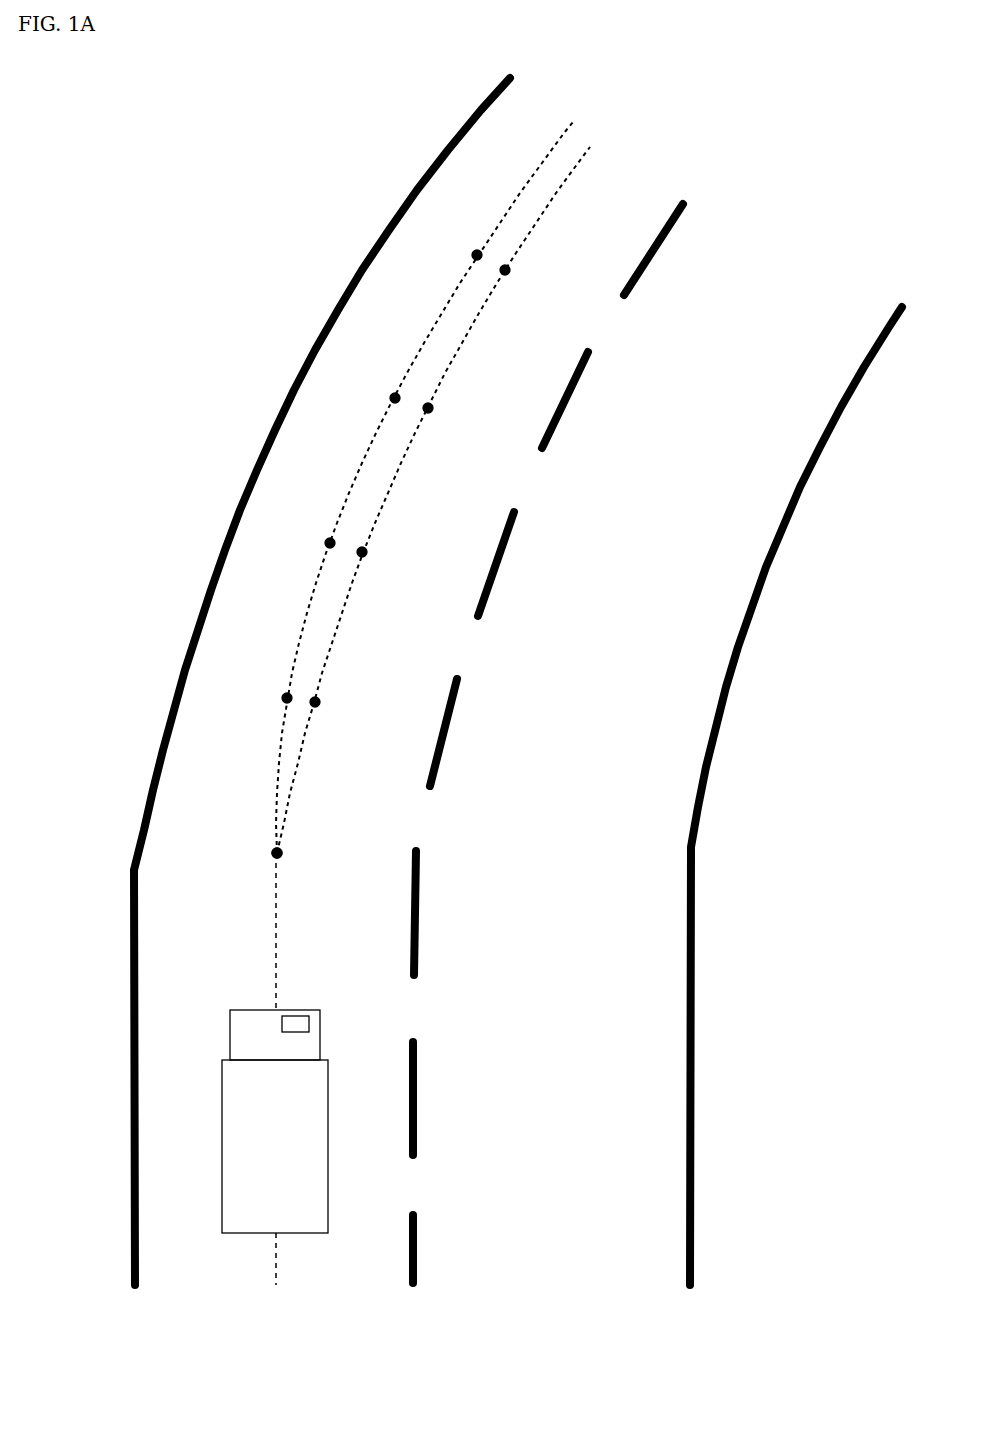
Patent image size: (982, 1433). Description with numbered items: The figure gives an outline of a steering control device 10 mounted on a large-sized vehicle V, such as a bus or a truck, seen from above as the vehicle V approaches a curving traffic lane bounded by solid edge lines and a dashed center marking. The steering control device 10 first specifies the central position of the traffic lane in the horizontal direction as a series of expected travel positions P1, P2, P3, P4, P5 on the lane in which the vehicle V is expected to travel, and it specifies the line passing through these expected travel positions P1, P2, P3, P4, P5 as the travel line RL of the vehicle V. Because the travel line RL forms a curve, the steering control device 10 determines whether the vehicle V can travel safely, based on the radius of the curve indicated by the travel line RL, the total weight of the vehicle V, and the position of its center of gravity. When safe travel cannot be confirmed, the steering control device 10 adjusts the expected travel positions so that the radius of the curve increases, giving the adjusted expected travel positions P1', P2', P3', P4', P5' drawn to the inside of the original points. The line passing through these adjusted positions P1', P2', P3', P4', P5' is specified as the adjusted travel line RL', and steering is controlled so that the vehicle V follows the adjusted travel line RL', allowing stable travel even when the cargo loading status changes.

The vehicle V is at (242, 1010).
The steering control device 10 is at (297, 1015).
The travel line RL is at (433, 500).
The adjusted travel line RL' is at (389, 487).
The expected travel position P1 is at (328, 835).
The expected travel position P2 is at (364, 684).
The expected travel position P3 is at (413, 535).
The expected travel position P4 is at (479, 390).
The expected travel position P5 is at (556, 251).
The adjusted expected travel position P1' is at (239, 834).
The adjusted expected travel position P2' is at (250, 679).
The adjusted expected travel position P3' is at (293, 524).
The adjusted expected travel position P4' is at (361, 378).
The adjusted expected travel position P5' is at (443, 235).